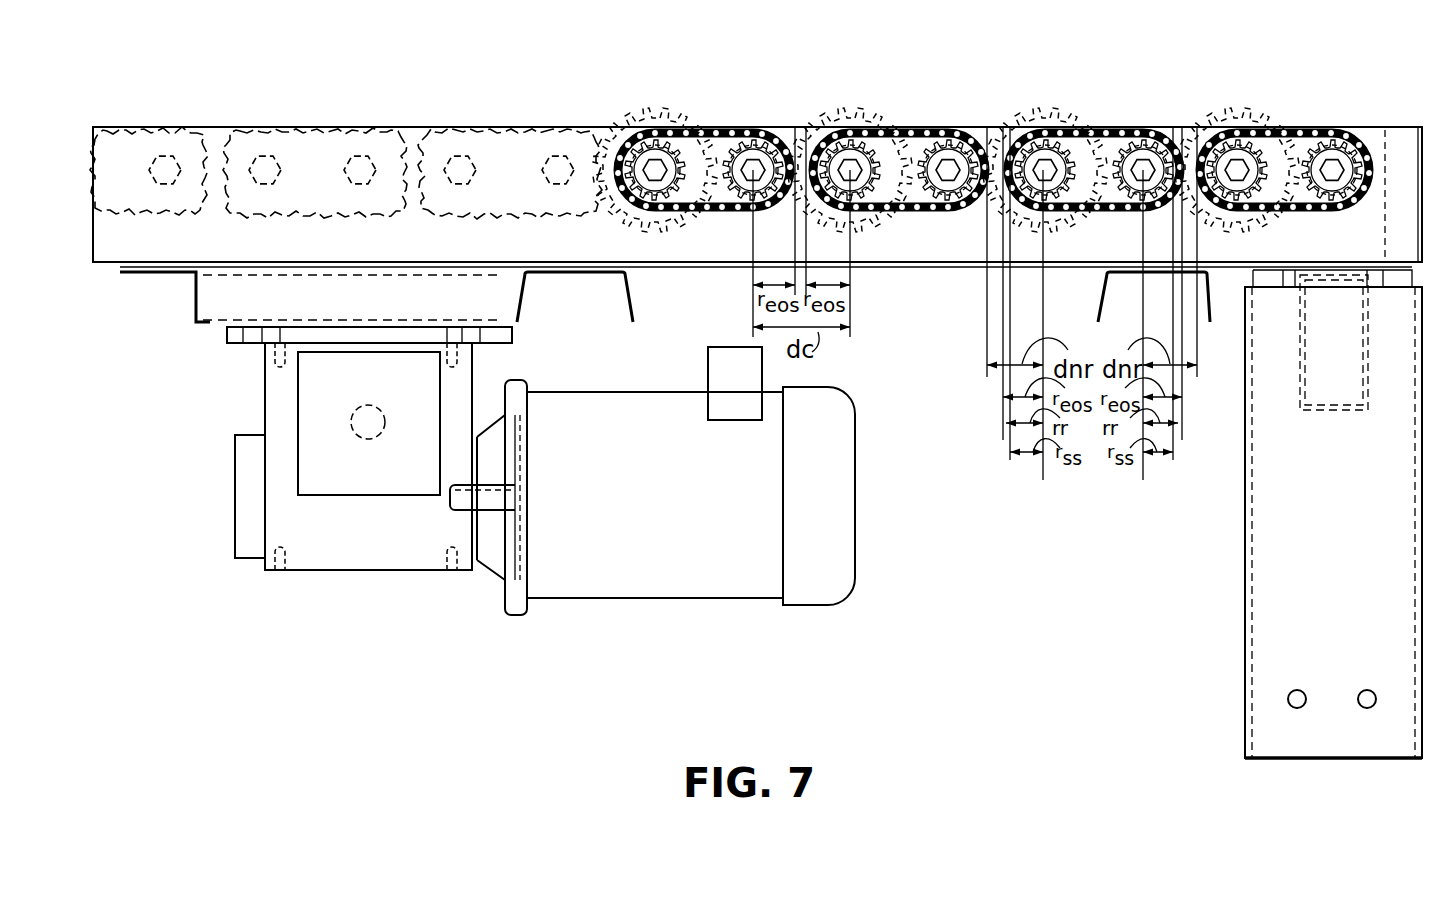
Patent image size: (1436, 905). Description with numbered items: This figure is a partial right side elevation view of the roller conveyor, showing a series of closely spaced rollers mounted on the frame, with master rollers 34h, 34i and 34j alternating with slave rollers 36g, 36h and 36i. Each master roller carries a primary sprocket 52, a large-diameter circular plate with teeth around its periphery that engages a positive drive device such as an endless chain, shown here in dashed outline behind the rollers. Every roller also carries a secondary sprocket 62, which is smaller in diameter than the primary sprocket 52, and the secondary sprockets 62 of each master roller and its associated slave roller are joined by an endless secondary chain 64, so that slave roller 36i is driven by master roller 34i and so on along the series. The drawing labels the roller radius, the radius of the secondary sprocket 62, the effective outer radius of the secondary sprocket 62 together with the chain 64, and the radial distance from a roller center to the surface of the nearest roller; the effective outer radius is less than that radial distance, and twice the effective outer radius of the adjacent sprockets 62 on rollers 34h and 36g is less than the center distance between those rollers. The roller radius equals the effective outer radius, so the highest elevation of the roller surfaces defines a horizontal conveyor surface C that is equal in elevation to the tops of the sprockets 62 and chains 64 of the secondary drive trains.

The primary sprocket 52 is at (657, 103).
The slave roller 36g is at (762, 132).
The master roller 34h is at (873, 132).
The slave roller 36h is at (948, 132).
The master roller 34i is at (1065, 130).
The slave roller 36i is at (1157, 132).
The master roller 34j is at (1262, 132).
The secondary sprocket 62 is at (1096, 130).
The secondary chain 64 is at (1114, 132).
The conveyor surface C is at (1382, 128).